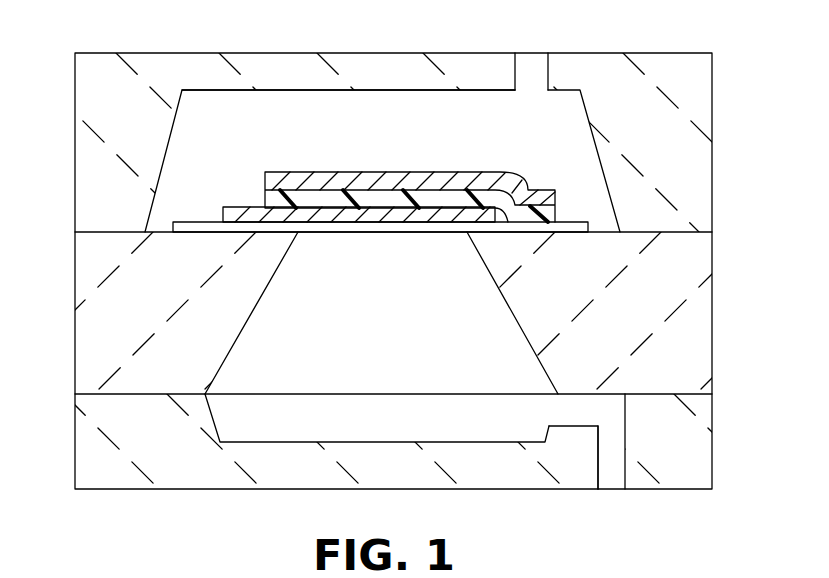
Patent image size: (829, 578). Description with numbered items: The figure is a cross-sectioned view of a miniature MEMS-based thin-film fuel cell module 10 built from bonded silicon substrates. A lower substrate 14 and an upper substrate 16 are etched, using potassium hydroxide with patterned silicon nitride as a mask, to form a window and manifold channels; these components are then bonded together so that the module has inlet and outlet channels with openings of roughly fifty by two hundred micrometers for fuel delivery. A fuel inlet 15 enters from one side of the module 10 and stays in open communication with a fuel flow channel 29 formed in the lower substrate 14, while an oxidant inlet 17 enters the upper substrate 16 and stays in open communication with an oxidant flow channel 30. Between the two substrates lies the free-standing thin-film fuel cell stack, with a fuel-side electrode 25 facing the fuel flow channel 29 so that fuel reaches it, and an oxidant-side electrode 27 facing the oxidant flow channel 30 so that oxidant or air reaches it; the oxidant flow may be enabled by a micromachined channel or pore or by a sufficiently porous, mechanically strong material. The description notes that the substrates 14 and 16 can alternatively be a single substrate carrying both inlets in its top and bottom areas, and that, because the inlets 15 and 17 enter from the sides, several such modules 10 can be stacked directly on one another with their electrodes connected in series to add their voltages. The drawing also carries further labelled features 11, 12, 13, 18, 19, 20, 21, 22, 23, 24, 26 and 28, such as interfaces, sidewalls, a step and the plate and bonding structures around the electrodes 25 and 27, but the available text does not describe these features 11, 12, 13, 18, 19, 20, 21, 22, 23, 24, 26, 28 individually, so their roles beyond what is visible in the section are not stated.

The fuel cell module 10 is at (748, 188).
The intermediate substrate layer 11 is at (713, 305).
The die attach plate 12 is at (298, 236).
The semiconductor die assembly 13 is at (250, 167).
The substrate 14 is at (713, 415).
The fuel inlet 15 is at (610, 472).
The substrate 16 is at (712, 121).
The oxidant inlet 17 is at (530, 63).
The lower layer interface 18 is at (75, 394).
The upper layer interface 19 is at (75, 233).
The left cavity sidewall 20 is at (268, 298).
The right cavity sidewall 21 is at (487, 272).
The cavity bottom wall 22 is at (219, 430).
The lower cavity portion 23 is at (392, 436).
The step 24 is at (572, 418).
The electrode 25 is at (240, 207).
The lead bond 26 is at (555, 212).
The electrode 27 is at (467, 172).
The upper cavity sidewall 28 is at (306, 91).
The flow channel 29 is at (404, 347).
The flow channel 30 is at (409, 130).